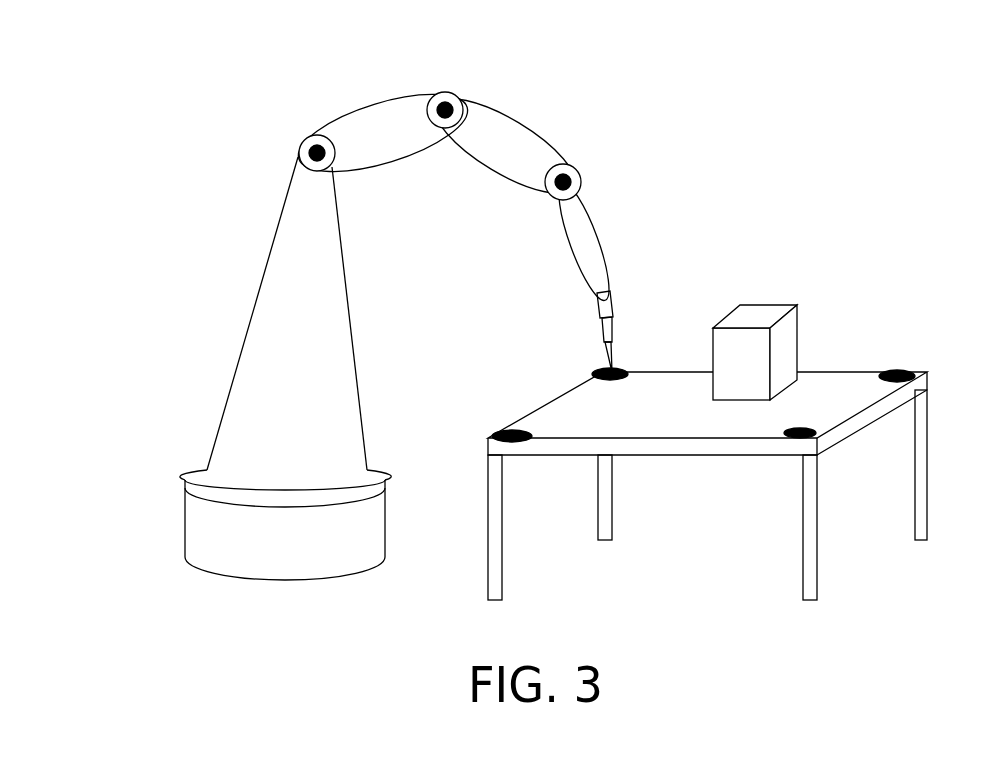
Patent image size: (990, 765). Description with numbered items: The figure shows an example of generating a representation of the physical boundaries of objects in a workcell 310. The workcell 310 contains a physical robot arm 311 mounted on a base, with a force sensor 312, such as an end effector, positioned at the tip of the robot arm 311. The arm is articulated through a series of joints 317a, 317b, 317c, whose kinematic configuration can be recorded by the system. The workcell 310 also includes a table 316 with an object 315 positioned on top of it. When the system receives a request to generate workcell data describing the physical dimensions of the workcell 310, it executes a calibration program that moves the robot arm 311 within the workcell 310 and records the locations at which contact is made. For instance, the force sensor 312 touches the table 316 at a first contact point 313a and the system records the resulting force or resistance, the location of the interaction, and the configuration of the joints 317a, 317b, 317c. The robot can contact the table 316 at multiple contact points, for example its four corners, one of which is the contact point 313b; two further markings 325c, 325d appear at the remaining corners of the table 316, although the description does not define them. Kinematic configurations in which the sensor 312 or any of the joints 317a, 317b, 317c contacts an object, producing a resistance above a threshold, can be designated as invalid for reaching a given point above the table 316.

The workcell 310 is at (914, 158).
The robot arm 311 is at (282, 212).
The force sensor 312 is at (612, 353).
The first contact point 313a is at (600, 372).
The contact point 313b is at (500, 430).
The object 315 is at (768, 305).
The table 316 is at (917, 495).
The joint 317a is at (317, 153).
The joint 317b is at (445, 110).
The joint 317c is at (563, 182).
The fiducial marker 325c is at (897, 376).
The fiducial marker 325d is at (800, 438).